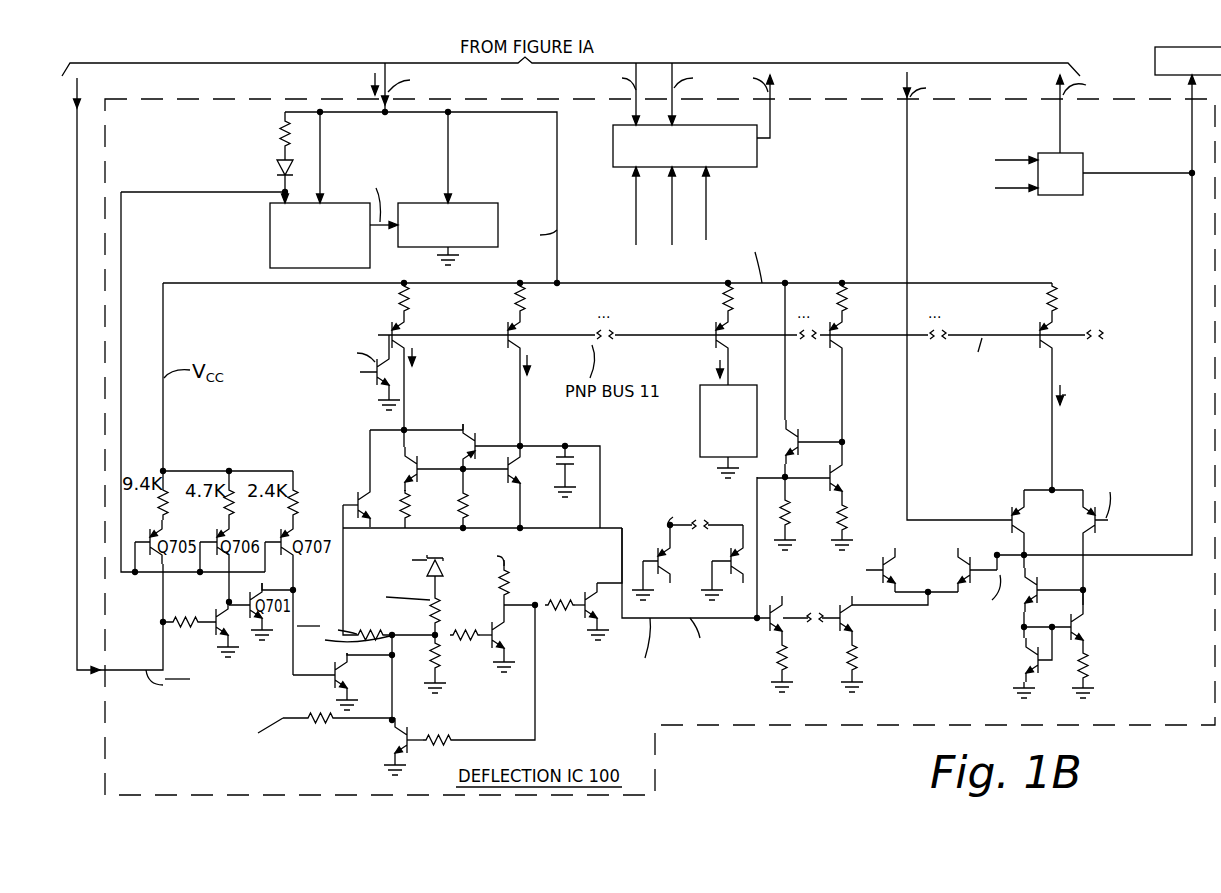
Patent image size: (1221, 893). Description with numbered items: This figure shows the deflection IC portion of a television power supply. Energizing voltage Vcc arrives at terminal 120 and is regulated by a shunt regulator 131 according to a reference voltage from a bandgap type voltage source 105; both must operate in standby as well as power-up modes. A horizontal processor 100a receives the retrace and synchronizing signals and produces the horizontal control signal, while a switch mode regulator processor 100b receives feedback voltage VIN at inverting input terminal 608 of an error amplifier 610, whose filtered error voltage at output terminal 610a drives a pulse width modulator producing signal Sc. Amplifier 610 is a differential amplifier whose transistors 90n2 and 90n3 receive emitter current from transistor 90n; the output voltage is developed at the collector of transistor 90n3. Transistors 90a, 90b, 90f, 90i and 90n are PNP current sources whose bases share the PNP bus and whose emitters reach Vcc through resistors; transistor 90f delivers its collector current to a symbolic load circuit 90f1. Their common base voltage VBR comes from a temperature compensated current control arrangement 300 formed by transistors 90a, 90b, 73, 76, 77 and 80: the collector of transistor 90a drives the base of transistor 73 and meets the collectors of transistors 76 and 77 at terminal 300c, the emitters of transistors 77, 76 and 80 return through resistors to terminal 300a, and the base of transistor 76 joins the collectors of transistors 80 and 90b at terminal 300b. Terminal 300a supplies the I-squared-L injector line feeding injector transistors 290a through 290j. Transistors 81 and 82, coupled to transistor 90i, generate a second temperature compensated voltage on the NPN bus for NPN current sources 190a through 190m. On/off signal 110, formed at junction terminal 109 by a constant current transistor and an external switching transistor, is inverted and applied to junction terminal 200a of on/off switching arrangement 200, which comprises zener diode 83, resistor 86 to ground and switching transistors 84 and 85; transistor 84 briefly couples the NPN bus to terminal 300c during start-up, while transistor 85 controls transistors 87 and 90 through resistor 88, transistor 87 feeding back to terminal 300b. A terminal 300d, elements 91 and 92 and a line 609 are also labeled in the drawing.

The energizing voltage receiving terminal 120 is at (403, 97).
The bandgap type voltage source 105 is at (345, 203).
The shunt regulator 131 is at (482, 203).
The horizontal processor 100a is at (757, 155).
The switch mode regulator processor 100b is at (1082, 235).
The inverting input terminal 608 is at (903, 96).
The on/off signal 110 is at (97, 672).
The junction terminal 109 is at (162, 622).
The transistor 73 is at (380, 385).
The PNP transistor 90a is at (386, 330).
The PNP transistor 90b is at (502, 330).
The PNP transistor 90f is at (716, 330).
The load circuit 90f1 is at (700, 414).
The PNP transistor 90i is at (842, 338).
The PNP transistor 90n is at (1046, 340).
The transistor 90n2 is at (1079, 505).
The transistor 90n3 is at (1005, 514).
The temperature compensated current control arrangement 300 is at (487, 394).
The terminal 300a is at (522, 530).
The terminal 300b is at (522, 444).
The terminal 300c is at (406, 430).
The node of circuit 300 300d is at (465, 472).
The transistor 76 is at (480, 442).
The transistor 77 is at (420, 470).
The transistor 80 is at (511, 472).
The transistor 81 is at (790, 452).
The transistor 82 is at (836, 475).
The zener diode 83 is at (428, 585).
The switching transistor 84 is at (372, 505).
The switching transistor 85 is at (500, 640).
The resistor 86 is at (442, 675).
The transistor 87 is at (605, 584).
The resistor 88 is at (507, 582).
The transistor 90 is at (400, 744).
The node 91 is at (391, 719).
The resistor 186K 92 is at (310, 720).
The on/off switching arrangement 200 is at (582, 657).
The junction terminal 200a is at (428, 614).
The injector transistor 290a is at (665, 553).
The injector transistor 290j is at (728, 566).
The NPN transistor 190a is at (786, 631).
The NPN transistor 190m is at (855, 634).
The output line 609 is at (1112, 530).
The error amplifier 610 is at (1063, 546).
The output terminal 610a is at (997, 556).